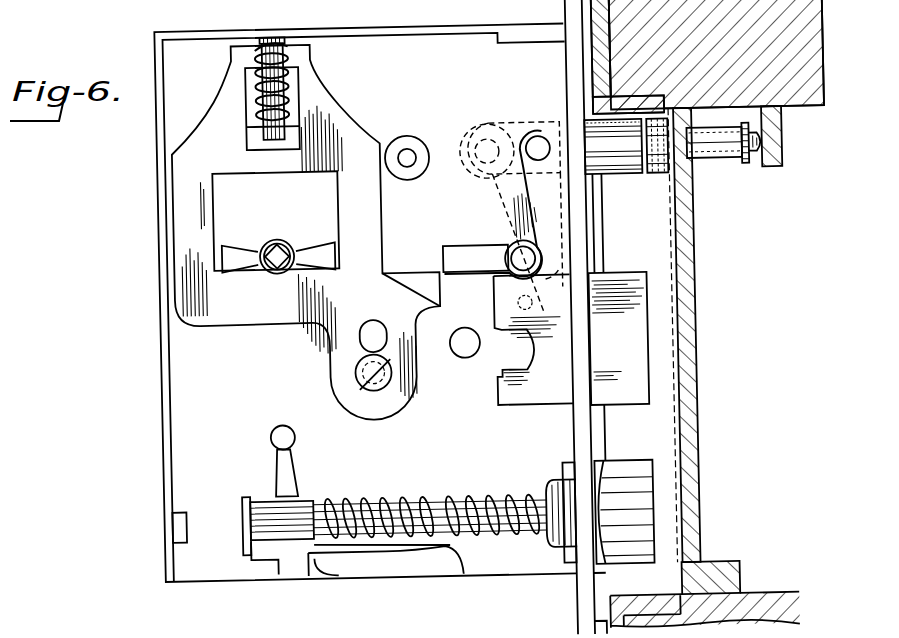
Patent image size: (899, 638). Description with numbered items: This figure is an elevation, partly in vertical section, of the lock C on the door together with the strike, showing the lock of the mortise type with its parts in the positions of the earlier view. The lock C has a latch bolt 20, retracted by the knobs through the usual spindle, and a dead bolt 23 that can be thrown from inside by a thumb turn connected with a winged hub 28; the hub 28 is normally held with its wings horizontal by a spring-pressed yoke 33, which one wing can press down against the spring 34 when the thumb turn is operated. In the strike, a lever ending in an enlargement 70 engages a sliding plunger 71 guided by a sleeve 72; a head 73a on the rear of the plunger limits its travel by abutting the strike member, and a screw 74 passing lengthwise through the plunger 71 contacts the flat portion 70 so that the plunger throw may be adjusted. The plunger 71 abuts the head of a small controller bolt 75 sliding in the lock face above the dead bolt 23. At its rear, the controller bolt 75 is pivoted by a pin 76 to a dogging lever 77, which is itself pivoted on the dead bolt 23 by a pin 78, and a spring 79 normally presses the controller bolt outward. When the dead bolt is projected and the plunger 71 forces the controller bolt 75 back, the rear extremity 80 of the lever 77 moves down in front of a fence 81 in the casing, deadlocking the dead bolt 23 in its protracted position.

The lock C is at (380, 319).
The latch bolt 20 is at (618, 467).
The dead bolt 23 is at (618, 317).
The winged hub 28 is at (239, 257).
The yoke 33 is at (326, 232).
The spring 34 is at (297, 85).
The enlargement 70 is at (783, 175).
The plunger 71 is at (701, 164).
The sleeve 72 is at (660, 178).
The head 73a is at (745, 174).
The screw 74 is at (757, 171).
The controller bolt 75 is at (613, 157).
The pin 76 is at (541, 139).
The dogging lever 77 is at (513, 240).
The pin 78 is at (506, 260).
The spring 79 is at (522, 184).
The rear extremity 80 is at (446, 256).
The fence 81 is at (408, 298).